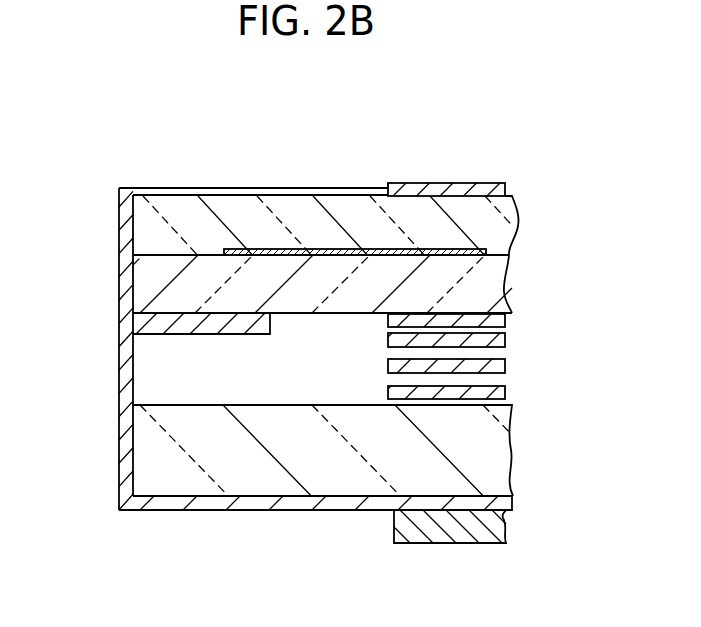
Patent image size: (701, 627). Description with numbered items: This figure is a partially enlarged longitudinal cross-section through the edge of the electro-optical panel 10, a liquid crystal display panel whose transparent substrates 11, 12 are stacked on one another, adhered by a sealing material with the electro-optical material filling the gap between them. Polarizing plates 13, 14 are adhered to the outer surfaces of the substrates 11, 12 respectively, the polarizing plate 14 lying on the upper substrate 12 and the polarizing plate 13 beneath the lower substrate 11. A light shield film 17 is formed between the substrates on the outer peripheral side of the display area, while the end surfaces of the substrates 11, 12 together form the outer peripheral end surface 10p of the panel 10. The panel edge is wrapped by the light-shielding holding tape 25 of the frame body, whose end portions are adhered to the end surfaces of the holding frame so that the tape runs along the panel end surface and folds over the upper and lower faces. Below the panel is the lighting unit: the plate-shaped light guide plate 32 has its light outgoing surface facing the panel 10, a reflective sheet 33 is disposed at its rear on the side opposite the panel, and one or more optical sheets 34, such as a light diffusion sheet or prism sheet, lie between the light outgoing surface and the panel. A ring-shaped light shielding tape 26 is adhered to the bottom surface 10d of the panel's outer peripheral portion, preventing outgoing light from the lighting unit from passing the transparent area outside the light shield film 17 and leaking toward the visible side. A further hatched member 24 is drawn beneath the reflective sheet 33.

The electro-optical panel 10 is at (343, 181).
The outer peripheral end surface 10p is at (121, 238).
The bottom surface of the outer peripheral portion 10d is at (295, 315).
The transparent substrate 11 is at (503, 290).
The transparent substrate 12 is at (518, 224).
The polarizing plate 13 is at (505, 340).
The polarizing plate 14 is at (484, 190).
The light shield film 17 is at (305, 248).
The lower terminal electrode 24 is at (483, 538).
The light-shielding holding tape 25 is at (207, 188).
The light shielding tape 26 is at (184, 325).
The light guide plate 32 is at (502, 457).
The reflective sheet 33 is at (435, 505).
The optical sheets 34 is at (505, 393).